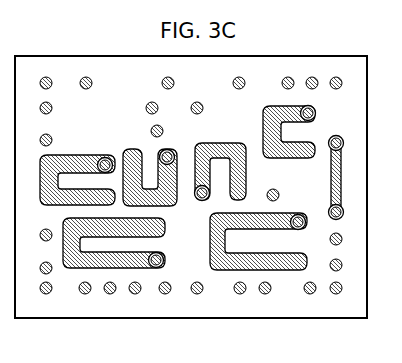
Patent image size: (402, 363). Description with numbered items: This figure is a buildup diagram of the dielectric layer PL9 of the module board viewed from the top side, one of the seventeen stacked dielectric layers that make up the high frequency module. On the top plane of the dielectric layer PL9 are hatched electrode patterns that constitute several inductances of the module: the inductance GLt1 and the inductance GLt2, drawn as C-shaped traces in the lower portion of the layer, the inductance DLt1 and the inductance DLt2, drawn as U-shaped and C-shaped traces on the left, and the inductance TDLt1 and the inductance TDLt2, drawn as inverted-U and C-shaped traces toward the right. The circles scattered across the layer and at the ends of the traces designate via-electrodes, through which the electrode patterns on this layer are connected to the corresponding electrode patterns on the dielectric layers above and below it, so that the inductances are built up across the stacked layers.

The dielectric layer PL9 is at (192, 312).
The inductance DLt2 is at (87, 156).
The inductance DLt1 is at (133, 152).
The inductance TDLt2 is at (305, 108).
The inductance TDLt1 is at (243, 182).
The inductance GLt2 is at (83, 252).
The inductance GLt1 is at (228, 252).